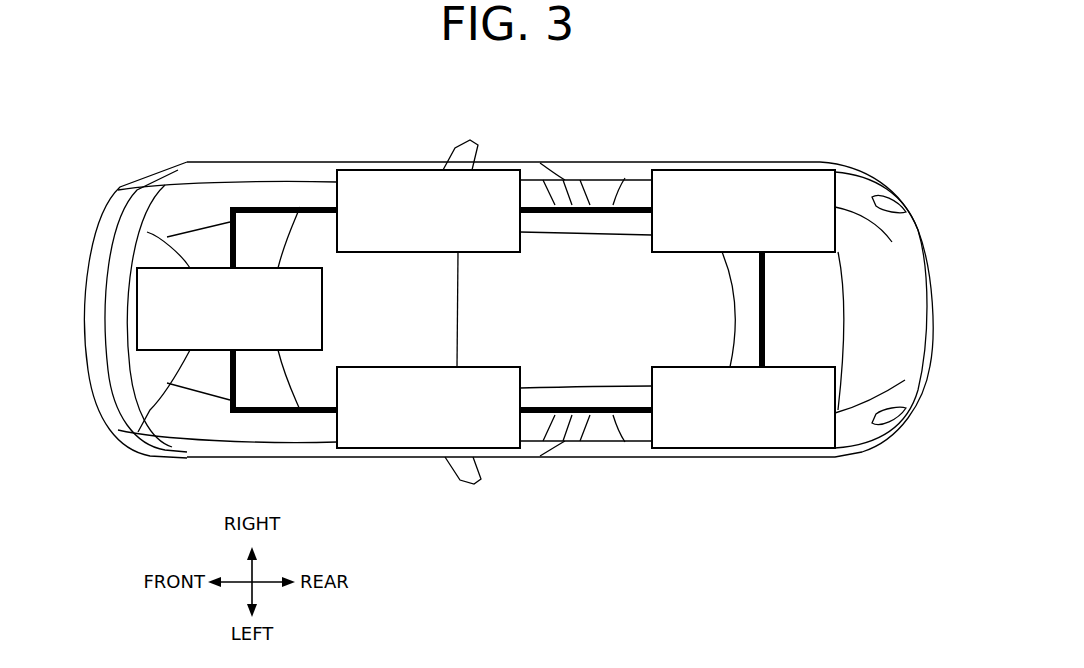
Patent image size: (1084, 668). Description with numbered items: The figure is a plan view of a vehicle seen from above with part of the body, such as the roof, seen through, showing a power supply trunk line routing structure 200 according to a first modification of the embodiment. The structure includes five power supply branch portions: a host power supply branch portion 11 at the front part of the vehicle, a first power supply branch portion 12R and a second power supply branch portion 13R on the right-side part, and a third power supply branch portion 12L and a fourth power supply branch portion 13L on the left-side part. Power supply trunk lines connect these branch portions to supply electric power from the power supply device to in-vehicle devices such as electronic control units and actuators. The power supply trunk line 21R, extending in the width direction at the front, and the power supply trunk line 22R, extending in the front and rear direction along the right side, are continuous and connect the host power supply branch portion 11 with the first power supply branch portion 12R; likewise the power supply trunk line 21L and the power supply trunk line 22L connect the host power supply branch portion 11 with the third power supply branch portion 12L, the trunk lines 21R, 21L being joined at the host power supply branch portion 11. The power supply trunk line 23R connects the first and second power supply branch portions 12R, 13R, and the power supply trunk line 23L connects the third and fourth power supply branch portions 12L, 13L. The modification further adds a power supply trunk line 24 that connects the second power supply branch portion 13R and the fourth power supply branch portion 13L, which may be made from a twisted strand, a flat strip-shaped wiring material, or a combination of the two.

The power supply trunk line routing structure 200 is at (888, 137).
The host power supply branch portion 11 is at (147, 232).
The first power supply branch portion 12R is at (482, 170).
The third power supply branch portion 12L is at (480, 448).
The second power supply branch portion 13R is at (781, 170).
The fourth power supply branch portion 13L is at (780, 448).
The power supply trunk line 21R is at (227, 247).
The power supply trunk line 21L is at (230, 402).
The power supply trunk line 22R is at (287, 250).
The power supply trunk line 22L is at (287, 380).
The power supply trunk line 23R is at (617, 182).
The power supply trunk line 23L is at (615, 448).
The power supply trunk line 24 is at (766, 332).